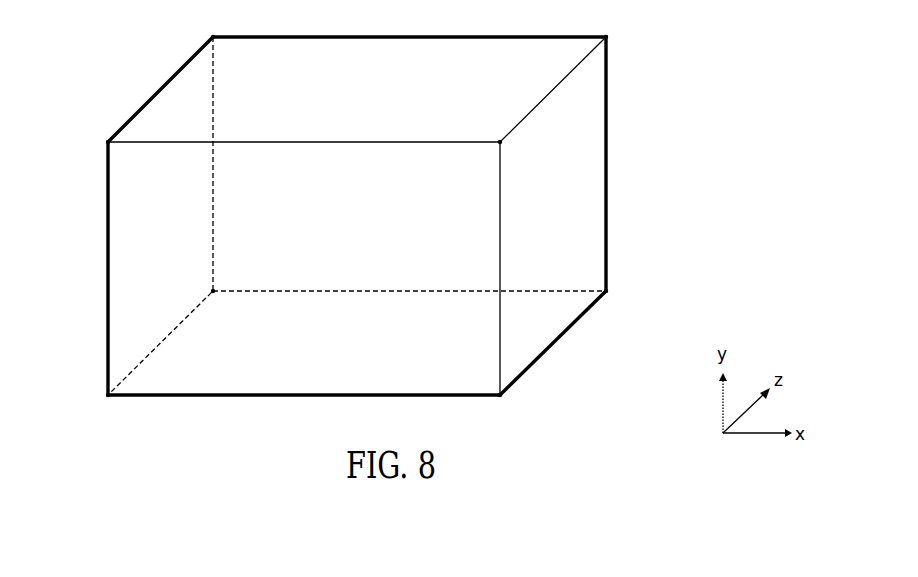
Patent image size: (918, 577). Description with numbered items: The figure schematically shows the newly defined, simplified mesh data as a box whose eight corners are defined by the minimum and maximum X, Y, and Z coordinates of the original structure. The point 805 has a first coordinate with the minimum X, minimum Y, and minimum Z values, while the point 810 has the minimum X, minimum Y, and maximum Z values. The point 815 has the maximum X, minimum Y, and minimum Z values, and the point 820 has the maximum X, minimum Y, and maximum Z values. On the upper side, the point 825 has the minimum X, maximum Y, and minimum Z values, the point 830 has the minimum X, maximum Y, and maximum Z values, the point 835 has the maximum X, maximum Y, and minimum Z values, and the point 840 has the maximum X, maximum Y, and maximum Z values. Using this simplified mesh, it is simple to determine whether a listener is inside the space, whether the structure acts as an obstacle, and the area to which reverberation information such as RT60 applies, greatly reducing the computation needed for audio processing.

The point 805 is at (108, 395).
The point 810 is at (213, 291).
The point 815 is at (500, 395).
The point 820 is at (606, 291).
The point 825 is at (108, 142).
The point 830 is at (213, 37).
The point 835 is at (500, 142).
The point 840 is at (606, 37).